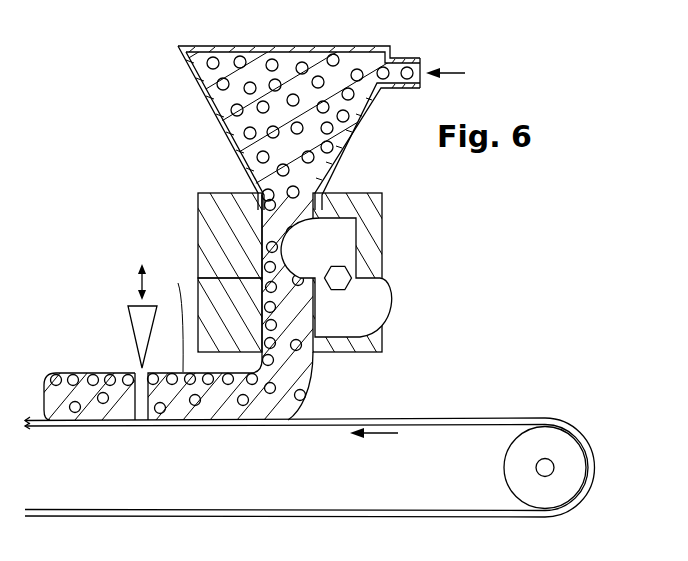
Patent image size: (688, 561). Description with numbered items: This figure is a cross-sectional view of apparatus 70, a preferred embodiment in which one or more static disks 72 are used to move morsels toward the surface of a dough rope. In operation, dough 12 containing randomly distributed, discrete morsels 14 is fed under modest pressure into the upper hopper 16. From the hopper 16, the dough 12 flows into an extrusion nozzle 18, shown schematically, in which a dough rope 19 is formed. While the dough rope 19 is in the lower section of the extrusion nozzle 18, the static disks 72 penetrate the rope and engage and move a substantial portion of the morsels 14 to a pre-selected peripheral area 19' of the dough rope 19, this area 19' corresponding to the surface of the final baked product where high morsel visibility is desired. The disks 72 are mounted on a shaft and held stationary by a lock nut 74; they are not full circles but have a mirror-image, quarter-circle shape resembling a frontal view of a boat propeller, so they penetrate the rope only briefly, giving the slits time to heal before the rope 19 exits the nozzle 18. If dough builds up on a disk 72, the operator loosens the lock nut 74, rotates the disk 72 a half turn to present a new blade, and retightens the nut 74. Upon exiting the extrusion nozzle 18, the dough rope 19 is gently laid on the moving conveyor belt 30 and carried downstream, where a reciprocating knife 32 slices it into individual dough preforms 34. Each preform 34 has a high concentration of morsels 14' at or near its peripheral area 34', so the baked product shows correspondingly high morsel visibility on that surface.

The dough 12 is at (396, 66).
The morsels 14 is at (297, 105).
The morsels 14' is at (160, 307).
The upper hopper 16 is at (192, 87).
The extrusion nozzle 18 is at (368, 193).
The dough rope 19 is at (225, 257).
The peripheral area 19' is at (210, 315).
The conveyor belt 30 is at (288, 421).
The reciprocating knife 32 is at (135, 322).
The dough preforms 34 is at (146, 324).
The peripheral area 34' is at (276, 306).
The apparatus 70 is at (455, 258).
The static disks 72 is at (340, 237).
The lock nut 74 is at (343, 285).